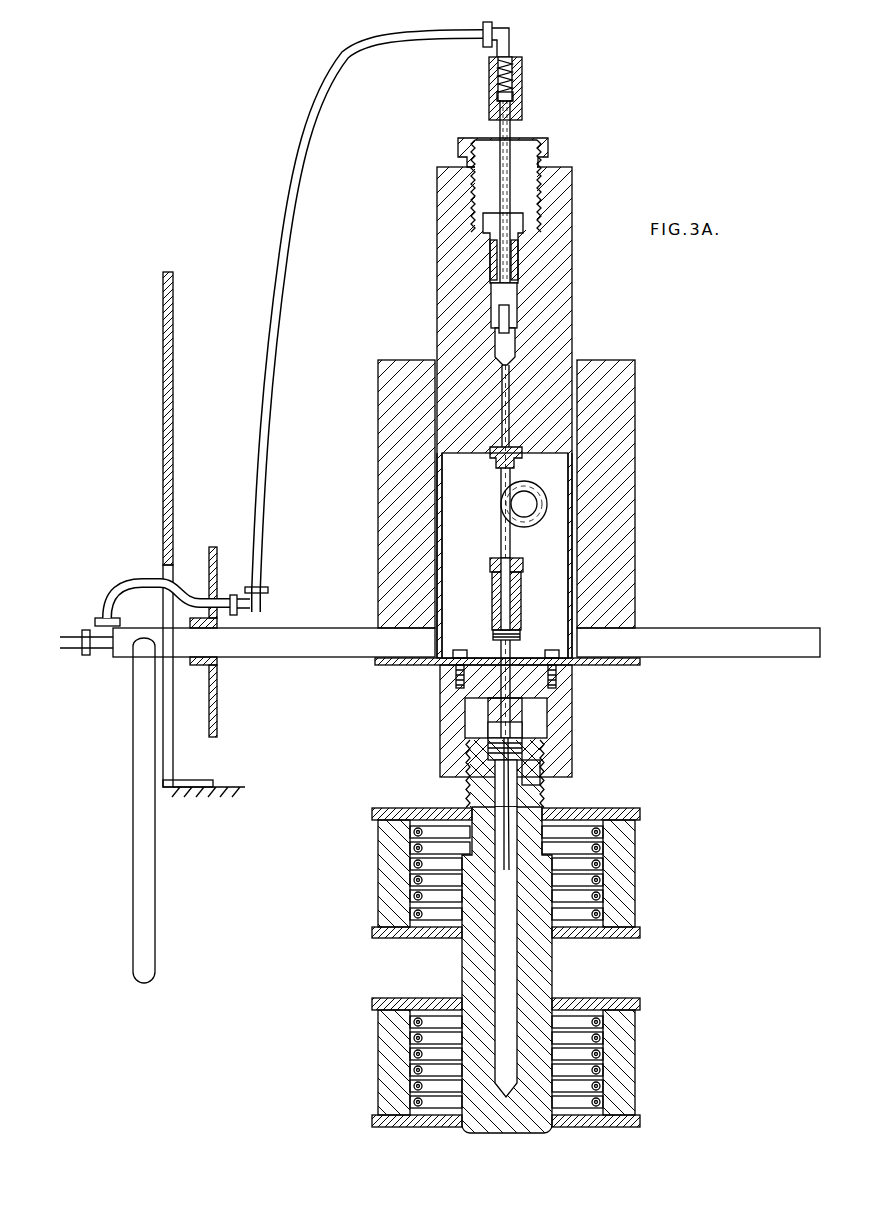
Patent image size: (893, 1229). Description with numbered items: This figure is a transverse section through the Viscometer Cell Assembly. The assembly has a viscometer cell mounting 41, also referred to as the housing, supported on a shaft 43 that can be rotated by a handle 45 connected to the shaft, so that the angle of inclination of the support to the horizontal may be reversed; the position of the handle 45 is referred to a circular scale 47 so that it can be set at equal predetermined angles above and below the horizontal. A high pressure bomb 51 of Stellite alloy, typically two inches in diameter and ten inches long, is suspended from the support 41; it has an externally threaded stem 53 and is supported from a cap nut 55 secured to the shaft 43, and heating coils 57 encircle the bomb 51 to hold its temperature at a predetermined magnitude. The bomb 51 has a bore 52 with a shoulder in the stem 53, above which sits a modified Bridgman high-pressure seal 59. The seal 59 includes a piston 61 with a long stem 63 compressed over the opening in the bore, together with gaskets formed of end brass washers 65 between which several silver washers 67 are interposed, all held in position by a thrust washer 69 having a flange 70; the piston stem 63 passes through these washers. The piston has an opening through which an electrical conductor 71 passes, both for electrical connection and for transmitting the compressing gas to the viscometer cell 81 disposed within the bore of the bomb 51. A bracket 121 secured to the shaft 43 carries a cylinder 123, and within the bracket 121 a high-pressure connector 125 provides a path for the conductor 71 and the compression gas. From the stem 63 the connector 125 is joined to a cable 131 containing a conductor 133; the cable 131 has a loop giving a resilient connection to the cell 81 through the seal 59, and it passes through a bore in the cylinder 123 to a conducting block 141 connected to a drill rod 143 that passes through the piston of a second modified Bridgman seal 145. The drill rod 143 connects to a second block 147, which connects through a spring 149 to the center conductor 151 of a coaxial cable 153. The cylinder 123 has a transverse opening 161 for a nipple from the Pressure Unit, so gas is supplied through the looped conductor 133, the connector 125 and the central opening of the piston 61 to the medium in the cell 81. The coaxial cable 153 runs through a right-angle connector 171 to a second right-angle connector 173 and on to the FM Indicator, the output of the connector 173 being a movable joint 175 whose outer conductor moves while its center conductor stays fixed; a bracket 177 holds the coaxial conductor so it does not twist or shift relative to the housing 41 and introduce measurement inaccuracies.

The viscometer cell mounting 41 is at (358, 573).
The shaft 43 is at (325, 628).
The handle 45 is at (140, 826).
The circular scale 47 is at (163, 500).
The high pressure bomb 51 is at (552, 966).
The bore 52 is at (490, 800).
The externally threaded stem 53 is at (468, 776).
The cap nut 55 is at (445, 771).
The heating coils 57 is at (380, 878).
The modified Bridgman high-pressure seal 59 is at (535, 763).
The piston 61 is at (535, 786).
The piston stem 63 is at (514, 651).
The brass washers 65 is at (530, 748).
The silver washers 67 is at (468, 752).
The thrust washer 69 is at (523, 732).
The flange 70 is at (540, 708).
The electrical conductor 71 is at (498, 650).
The viscometer cell 81 is at (490, 960).
The bracket 121 is at (404, 364).
The cylinder 123 is at (572, 188).
The high-pressure connector 125 is at (523, 581).
The cable 131 is at (500, 521).
The conductor 133 is at (543, 485).
The conducting block 141 is at (509, 318).
The drill rod 143 is at (505, 297).
The second modified Bridgman seal 145 is at (548, 147).
The second block 147 is at (522, 97).
The spring 149 is at (520, 83).
The center conductor 151 is at (522, 59).
The coaxial cable 153 is at (389, 46).
The transverse opening 161 is at (478, 430).
The right-angle connector 171 is at (262, 587).
The second right-angle connector 173 is at (102, 616).
The movable joint 175 is at (74, 630).
The bracket 177 is at (212, 545).